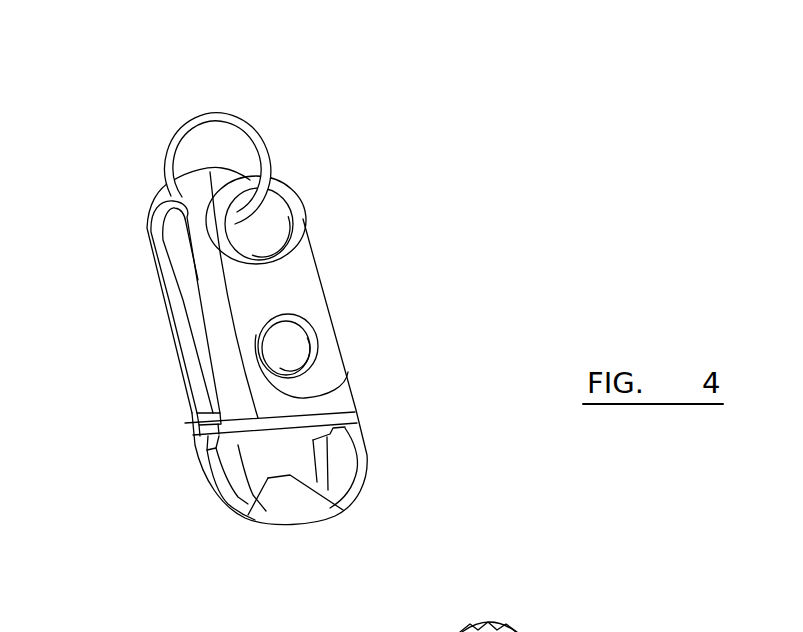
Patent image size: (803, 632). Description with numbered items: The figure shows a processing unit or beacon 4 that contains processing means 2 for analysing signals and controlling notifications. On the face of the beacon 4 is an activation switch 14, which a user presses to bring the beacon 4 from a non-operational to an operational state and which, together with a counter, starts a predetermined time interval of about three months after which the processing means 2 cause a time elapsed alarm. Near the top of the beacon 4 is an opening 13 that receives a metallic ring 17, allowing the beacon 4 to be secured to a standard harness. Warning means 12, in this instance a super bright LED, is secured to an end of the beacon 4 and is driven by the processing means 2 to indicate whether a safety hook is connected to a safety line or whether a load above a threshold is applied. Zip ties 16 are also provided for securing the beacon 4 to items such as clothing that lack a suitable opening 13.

The processing means 2 is at (345, 294).
The beacon 4 is at (178, 317).
The warning means 12 is at (287, 456).
The opening 13 is at (275, 230).
The activation switch 14 is at (294, 347).
The zip ties 16 is at (190, 424).
The metallic ring 17 is at (258, 130).